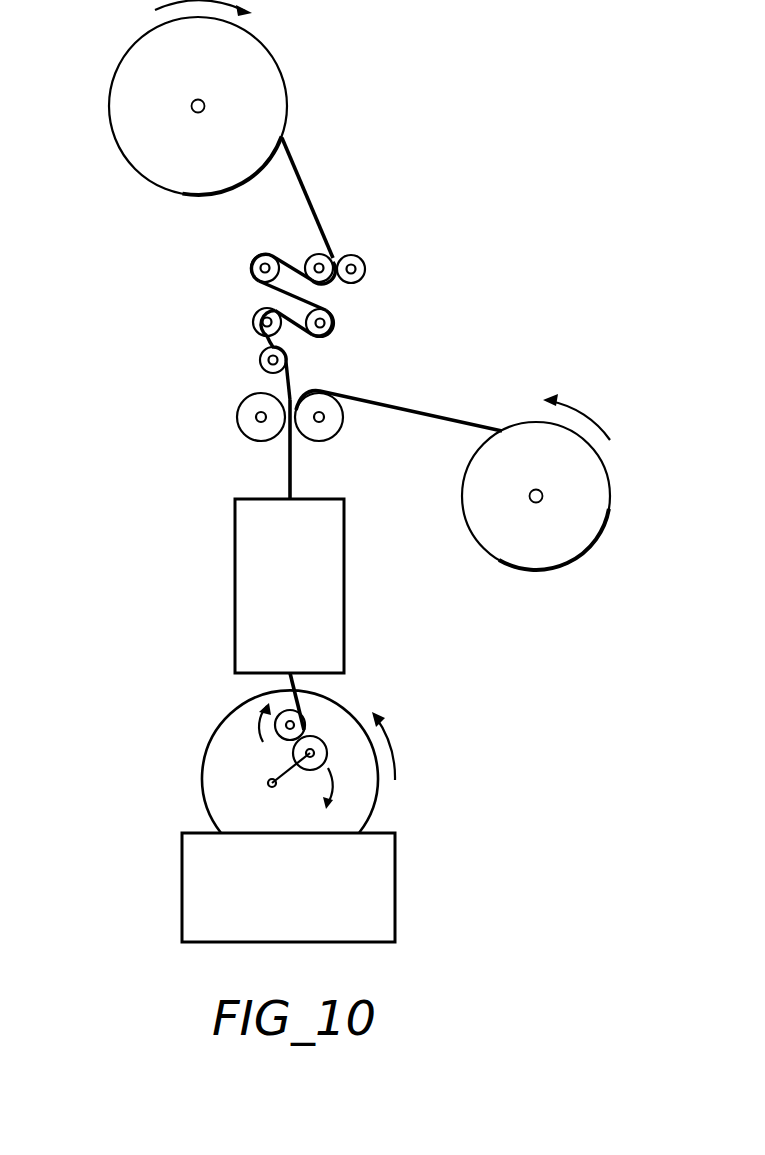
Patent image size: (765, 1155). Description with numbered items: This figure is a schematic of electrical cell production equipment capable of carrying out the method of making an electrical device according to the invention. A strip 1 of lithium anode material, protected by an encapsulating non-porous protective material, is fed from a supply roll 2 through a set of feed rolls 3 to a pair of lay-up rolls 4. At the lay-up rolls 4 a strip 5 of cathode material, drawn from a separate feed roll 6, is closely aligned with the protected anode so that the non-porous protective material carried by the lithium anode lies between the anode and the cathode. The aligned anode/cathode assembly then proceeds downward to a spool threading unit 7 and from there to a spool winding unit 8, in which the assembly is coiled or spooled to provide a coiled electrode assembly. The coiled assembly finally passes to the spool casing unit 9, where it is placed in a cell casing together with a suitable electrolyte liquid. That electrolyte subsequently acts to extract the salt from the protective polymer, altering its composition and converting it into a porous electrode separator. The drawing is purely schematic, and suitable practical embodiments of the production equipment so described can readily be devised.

The strip of lithium anode material 1 is at (302, 174).
The supply roll 2 is at (260, 70).
The feed rolls 3 is at (375, 294).
The lay-up rolls 4 is at (327, 430).
The strip of cathode material 5 is at (432, 414).
The feed roll 6 is at (498, 532).
The spool threading unit 7 is at (250, 598).
The spool winding unit 8 is at (230, 760).
The spool casing unit 9 is at (213, 892).